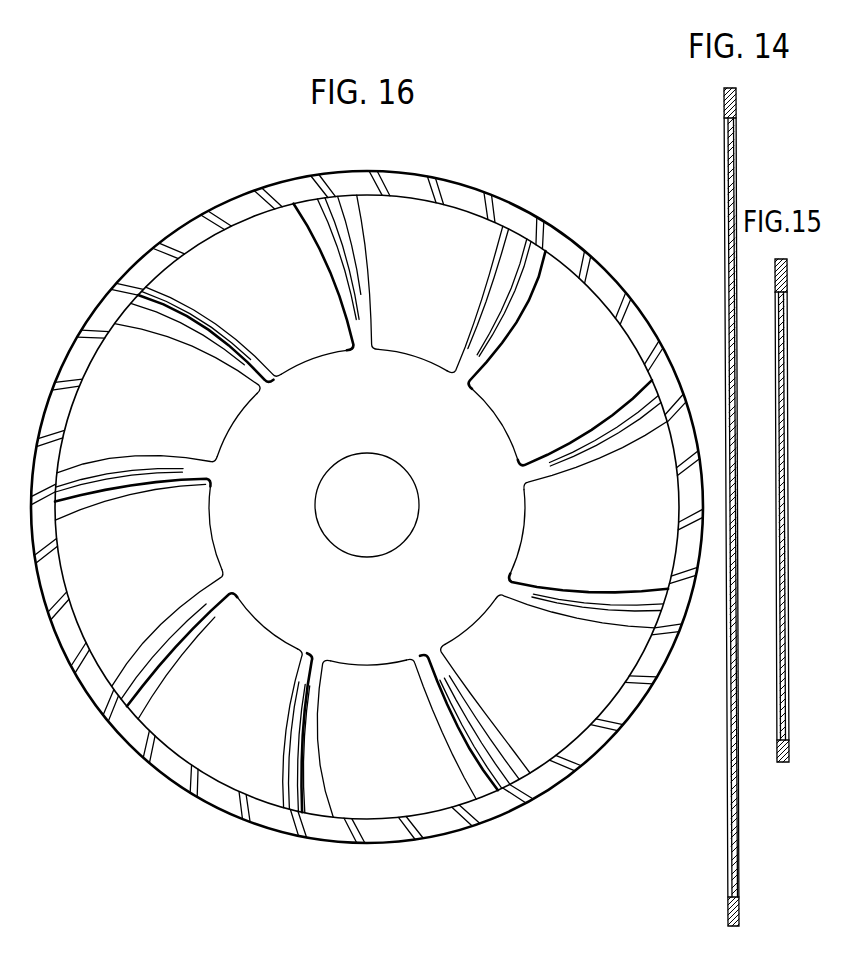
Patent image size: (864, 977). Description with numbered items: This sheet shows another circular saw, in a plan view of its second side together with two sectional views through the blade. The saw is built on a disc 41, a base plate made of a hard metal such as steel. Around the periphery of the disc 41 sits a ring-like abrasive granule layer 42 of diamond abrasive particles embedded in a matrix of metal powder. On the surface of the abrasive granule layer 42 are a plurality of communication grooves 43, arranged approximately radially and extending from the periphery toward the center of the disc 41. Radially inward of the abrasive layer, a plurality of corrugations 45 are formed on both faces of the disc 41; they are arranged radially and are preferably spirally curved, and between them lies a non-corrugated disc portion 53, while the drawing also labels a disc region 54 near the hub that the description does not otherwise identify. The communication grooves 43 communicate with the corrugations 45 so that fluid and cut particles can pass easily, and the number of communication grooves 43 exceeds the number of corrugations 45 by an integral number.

In FIG. 16, the disc 41 is at (311, 849).
In FIG. 14, the abrasive granule layer 42 is at (722, 106).
In FIG. 15, the abrasive granule layer 42 is at (788, 270).
In FIG. 16, the communication grooves 43 is at (415, 836).
In FIG. 16, the corrugations 45 is at (506, 790).
In FIG. 15, the corrugations 45 is at (787, 470).
In FIG. 16, the non-corrugated disc portion 53 is at (232, 760).
In FIG. 14, the non-corrugated disc portion 53 is at (724, 208).
In FIG. 16, the hub 54 is at (328, 373).
In FIG. 14, the hub 54 is at (726, 652).